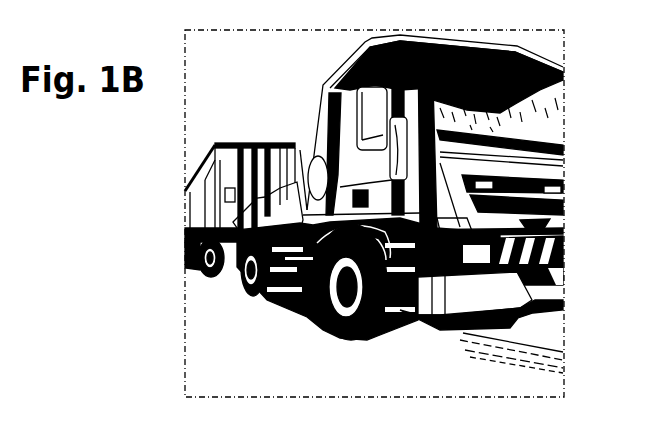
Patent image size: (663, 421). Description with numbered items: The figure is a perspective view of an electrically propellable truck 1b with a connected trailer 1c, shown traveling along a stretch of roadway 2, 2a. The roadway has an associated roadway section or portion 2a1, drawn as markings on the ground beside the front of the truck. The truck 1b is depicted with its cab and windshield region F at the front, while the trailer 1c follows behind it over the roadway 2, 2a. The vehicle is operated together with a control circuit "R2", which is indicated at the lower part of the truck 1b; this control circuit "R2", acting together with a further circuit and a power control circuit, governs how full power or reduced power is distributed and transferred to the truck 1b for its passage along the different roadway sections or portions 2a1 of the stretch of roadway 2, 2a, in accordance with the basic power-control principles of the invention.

The electrically propellable truck 1b is at (352, 58).
The connected trailer 1c is at (252, 147).
The windshield / front face F is at (560, 100).
The stretch of roadway 2 is at (260, 342).
The control circuit R2 is at (312, 327).
The stretch of roadway 2a is at (557, 337).
The roadway section or portion 2a1 is at (507, 357).